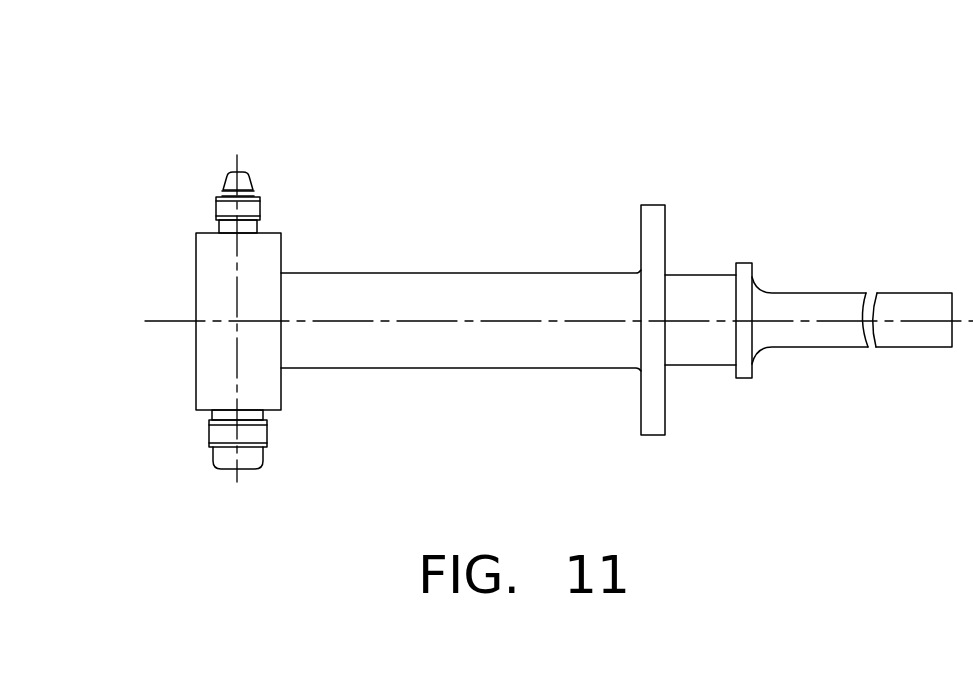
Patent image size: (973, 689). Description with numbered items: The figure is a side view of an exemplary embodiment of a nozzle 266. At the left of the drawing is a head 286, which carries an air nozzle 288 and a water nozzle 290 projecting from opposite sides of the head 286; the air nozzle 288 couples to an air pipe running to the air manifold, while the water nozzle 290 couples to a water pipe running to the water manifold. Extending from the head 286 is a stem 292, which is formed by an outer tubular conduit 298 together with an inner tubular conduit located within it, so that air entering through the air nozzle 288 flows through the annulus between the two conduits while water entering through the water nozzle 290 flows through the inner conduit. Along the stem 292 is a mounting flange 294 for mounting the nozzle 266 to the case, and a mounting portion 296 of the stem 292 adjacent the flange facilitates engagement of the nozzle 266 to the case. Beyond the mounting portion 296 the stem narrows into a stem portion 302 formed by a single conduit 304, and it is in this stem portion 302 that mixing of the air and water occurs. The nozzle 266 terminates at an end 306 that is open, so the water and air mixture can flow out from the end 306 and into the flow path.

The nozzle 266 is at (571, 91).
The head 286 is at (196, 262).
The air nozzle 288 is at (245, 472).
The water nozzle 290 is at (245, 172).
The stem 292 is at (393, 271).
The mounting flange 294 is at (652, 203).
The mounting portion 296 is at (696, 274).
The outer tubular conduit 298 is at (398, 369).
The stem portion 302 is at (813, 331).
The single conduit 304 is at (830, 292).
The end 306 is at (953, 307).